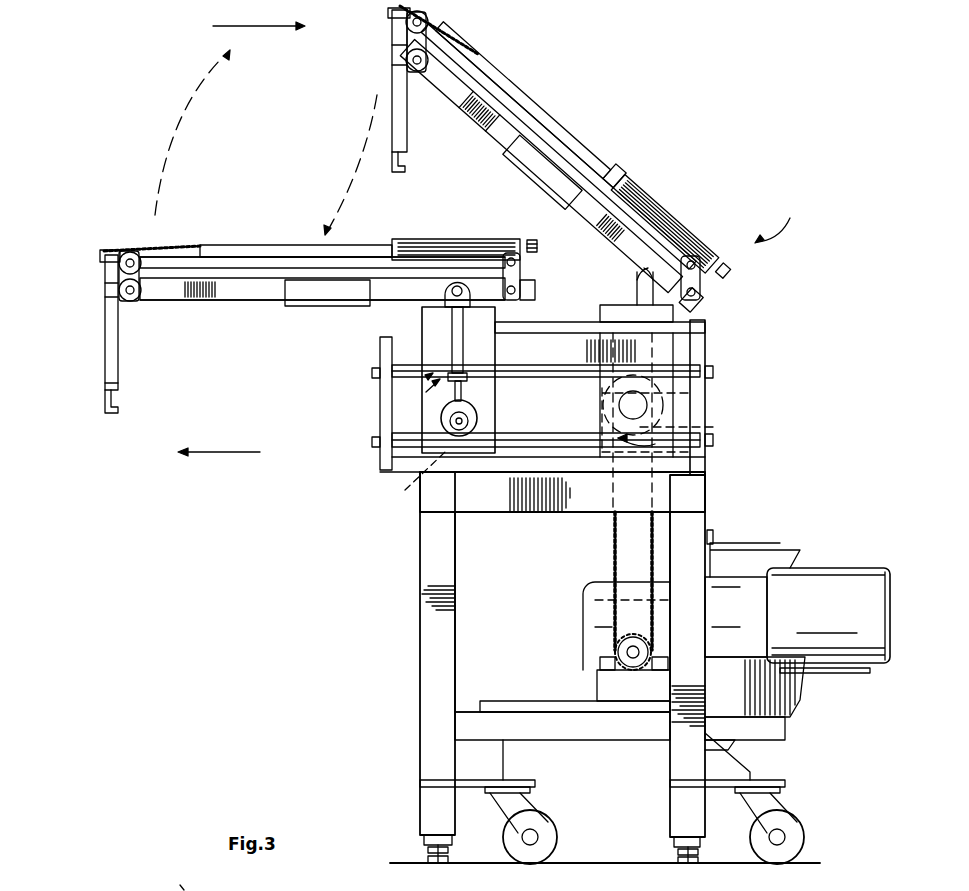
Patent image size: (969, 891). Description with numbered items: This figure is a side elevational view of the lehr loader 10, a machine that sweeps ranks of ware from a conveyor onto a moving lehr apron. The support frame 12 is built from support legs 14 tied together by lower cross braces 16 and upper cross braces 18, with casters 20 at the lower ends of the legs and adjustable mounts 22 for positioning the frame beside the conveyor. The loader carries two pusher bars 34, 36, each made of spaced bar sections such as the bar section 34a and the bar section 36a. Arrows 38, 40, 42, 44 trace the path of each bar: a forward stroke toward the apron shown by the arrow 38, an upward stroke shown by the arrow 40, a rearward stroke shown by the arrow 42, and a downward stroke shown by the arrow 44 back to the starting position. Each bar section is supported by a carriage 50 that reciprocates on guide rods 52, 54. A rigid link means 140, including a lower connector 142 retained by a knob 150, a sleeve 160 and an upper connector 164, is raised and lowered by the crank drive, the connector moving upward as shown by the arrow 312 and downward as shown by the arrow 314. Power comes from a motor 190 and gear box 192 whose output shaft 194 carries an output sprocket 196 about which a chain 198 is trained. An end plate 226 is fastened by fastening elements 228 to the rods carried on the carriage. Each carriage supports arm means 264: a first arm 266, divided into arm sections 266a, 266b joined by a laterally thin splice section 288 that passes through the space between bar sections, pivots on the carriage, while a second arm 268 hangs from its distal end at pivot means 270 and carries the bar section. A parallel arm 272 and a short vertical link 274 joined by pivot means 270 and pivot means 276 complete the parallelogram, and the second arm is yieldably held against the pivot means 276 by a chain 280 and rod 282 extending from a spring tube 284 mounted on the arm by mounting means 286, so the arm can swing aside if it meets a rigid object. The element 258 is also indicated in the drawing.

The lehr loader 10 is at (783, 220).
The support frame 12 is at (373, 607).
The support legs 14 is at (688, 530).
The lower cross braces 16 is at (573, 728).
The upper cross braces 18 is at (548, 512).
The casters 20 is at (553, 830).
The adjustable mounts 22 is at (418, 852).
The pusher bar 34 is at (413, 192).
The bar section 34a is at (392, 170).
The pusher bar 36 is at (110, 422).
The bar section 36a is at (105, 400).
The arrow 38 is at (225, 453).
The arrow 40 is at (165, 165).
The arrow 42 is at (255, 26).
The arrow 44 is at (340, 180).
The carriage 50 is at (485, 422).
The guide rod 52 is at (580, 372).
The guide rod 54 is at (558, 440).
The rigid link means 140 is at (430, 375).
The connector 142 is at (447, 408).
The knob 150 is at (458, 438).
The sleeve 160 is at (455, 333).
The upper connector 164 is at (455, 300).
The motor 190 is at (837, 590).
The gear box 192 is at (588, 607).
The output shaft 194 is at (626, 652).
The output sprocket 196 is at (618, 637).
The chain 198 is at (615, 555).
The end plate 226 is at (517, 278).
The fastening elements 228 is at (510, 258).
The control element 258 is at (170, 878).
The arm means 264 is at (212, 315).
The first arm 266 is at (280, 292).
The arm section 266a is at (640, 285).
The arm section 266b is at (510, 125).
The second arm 268 is at (112, 357).
The pivot means 270 is at (143, 297).
The arm 272 is at (282, 263).
The link 274 is at (115, 270).
The pivot means 276 is at (127, 252).
The chain 280 is at (170, 243).
The rod 282 is at (230, 244).
The spring tube 284 is at (452, 242).
The mounting means 286 is at (632, 180).
The splice section 288 is at (315, 308).
The arrow 312 is at (400, 480).
The arrow 314 is at (712, 395).